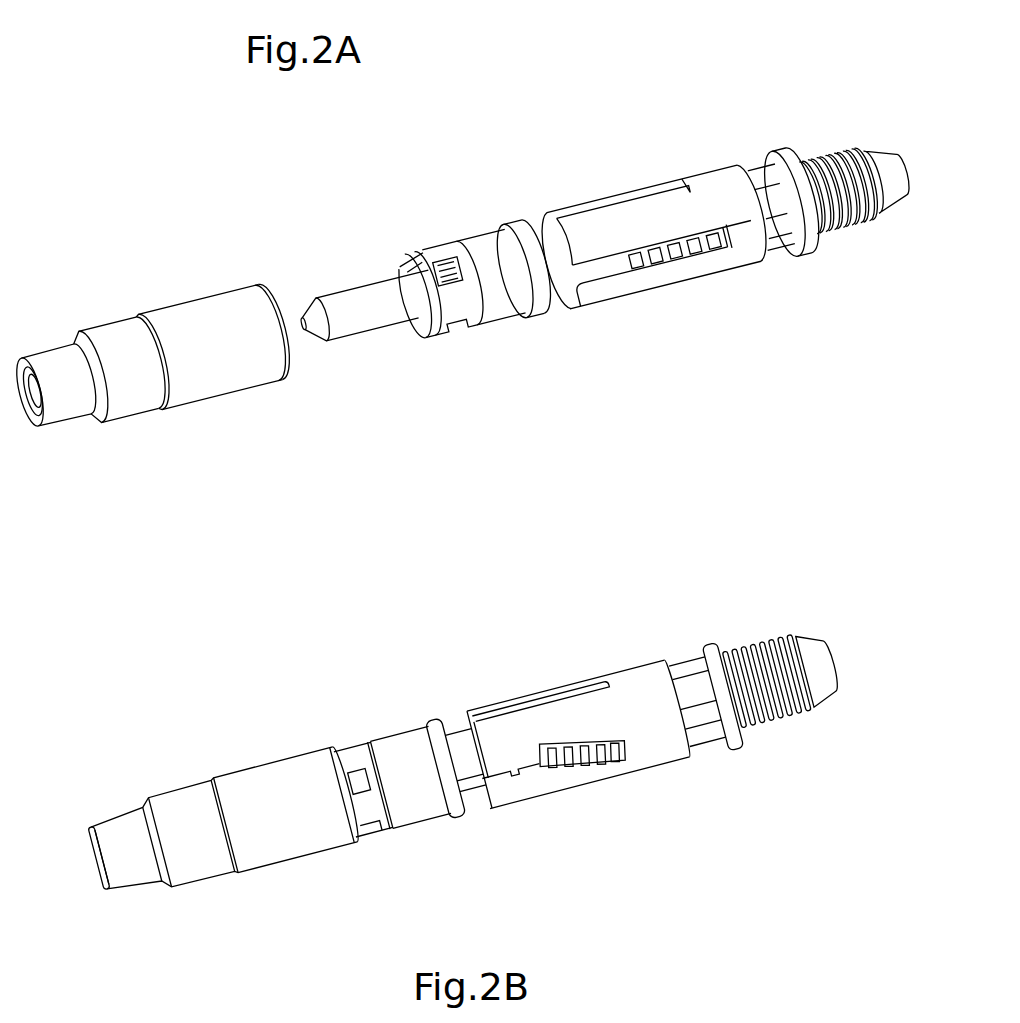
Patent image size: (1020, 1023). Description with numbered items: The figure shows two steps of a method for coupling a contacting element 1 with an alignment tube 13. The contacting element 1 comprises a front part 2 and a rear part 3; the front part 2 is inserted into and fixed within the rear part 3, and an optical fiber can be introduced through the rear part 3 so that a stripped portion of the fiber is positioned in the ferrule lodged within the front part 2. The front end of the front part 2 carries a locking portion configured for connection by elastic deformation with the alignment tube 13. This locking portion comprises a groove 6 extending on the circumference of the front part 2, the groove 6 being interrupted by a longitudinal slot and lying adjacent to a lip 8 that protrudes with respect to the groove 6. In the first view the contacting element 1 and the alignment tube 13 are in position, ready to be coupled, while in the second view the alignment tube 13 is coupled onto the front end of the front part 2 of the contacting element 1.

In FIG. 2A, the contacting element 1 is at (560, 175).
In FIG. 2B, the contacting element 1 is at (685, 793).
In FIG. 2A, the front part 2 is at (422, 290).
In FIG. 2A, the rear part 3 is at (703, 145).
In FIG. 2A, the groove 6 is at (420, 252).
In FIG. 2A, the lip 8 is at (430, 337).
In FIG. 2A, the alignment tube 13 is at (90, 332).
In FIG. 2B, the alignment tube 13 is at (282, 887).